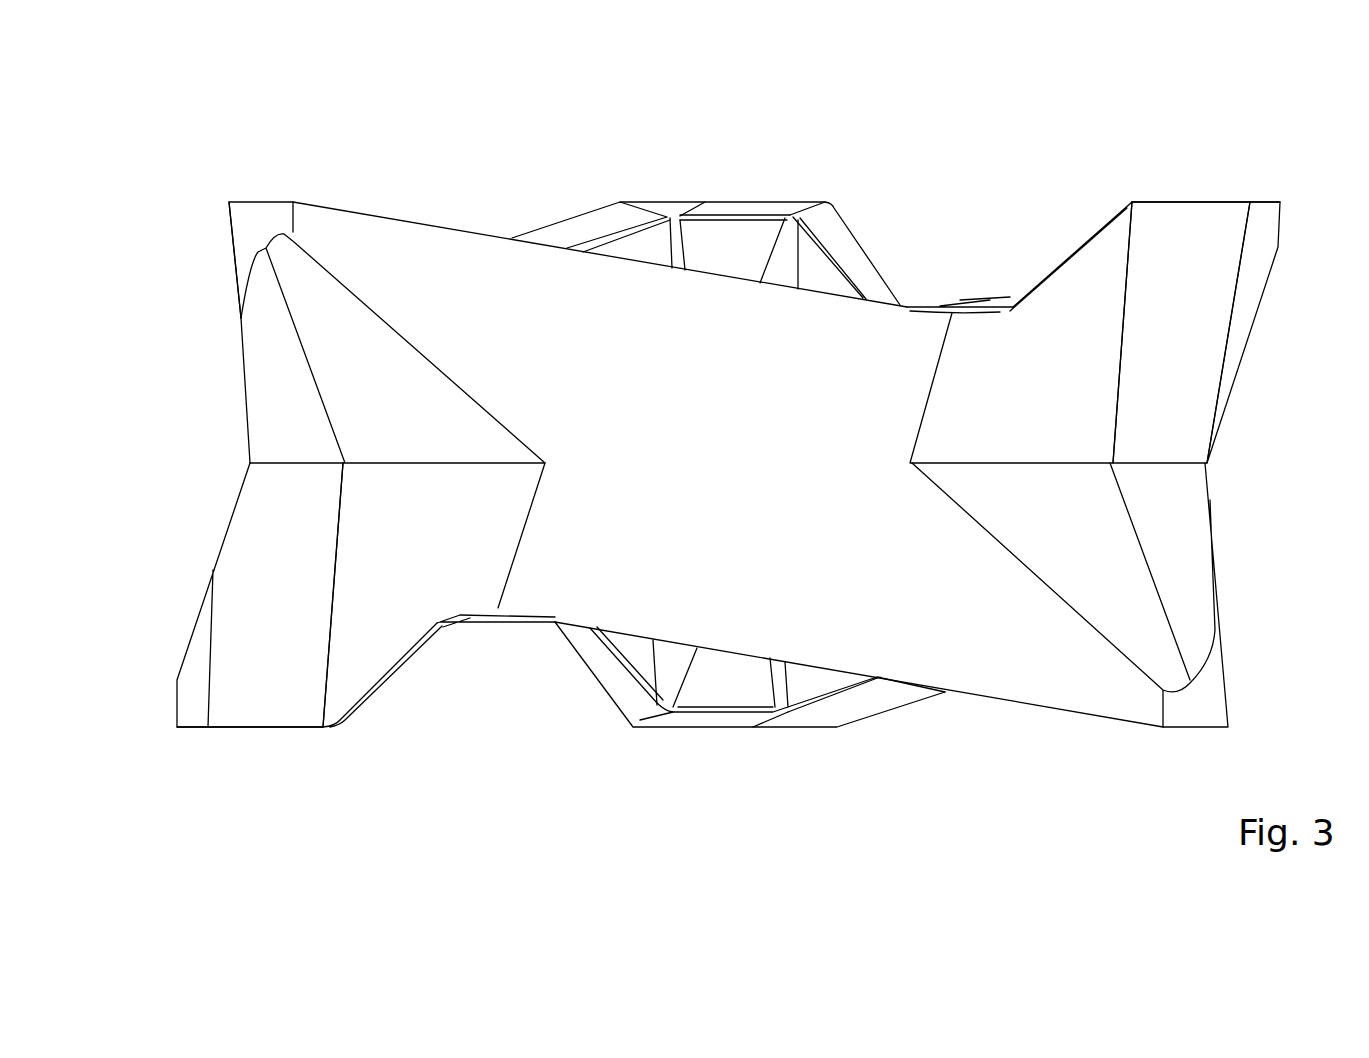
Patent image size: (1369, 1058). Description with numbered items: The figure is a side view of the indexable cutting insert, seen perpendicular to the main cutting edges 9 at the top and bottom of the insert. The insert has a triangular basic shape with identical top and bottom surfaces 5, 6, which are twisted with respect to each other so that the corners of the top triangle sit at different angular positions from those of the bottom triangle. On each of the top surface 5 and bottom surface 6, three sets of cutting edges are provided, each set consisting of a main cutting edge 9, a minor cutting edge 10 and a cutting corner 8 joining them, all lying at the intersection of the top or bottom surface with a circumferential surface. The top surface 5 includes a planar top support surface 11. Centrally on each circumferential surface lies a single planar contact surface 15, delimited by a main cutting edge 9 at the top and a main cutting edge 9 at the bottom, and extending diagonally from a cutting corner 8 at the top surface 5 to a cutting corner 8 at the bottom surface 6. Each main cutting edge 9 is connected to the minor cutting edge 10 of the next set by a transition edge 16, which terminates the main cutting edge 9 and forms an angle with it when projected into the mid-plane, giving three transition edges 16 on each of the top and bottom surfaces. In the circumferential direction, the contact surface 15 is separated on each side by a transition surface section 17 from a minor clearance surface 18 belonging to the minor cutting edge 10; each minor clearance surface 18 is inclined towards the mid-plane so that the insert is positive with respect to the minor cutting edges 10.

The top surface 5 is at (388, 197).
The bottom surface 6 is at (1043, 720).
The cutting corner 8 is at (268, 201).
The main cutting edge 9 is at (583, 250).
The minor cutting edge 10 is at (1203, 202).
The planar top support surface 11 is at (935, 285).
The planar contact surface 15 is at (738, 598).
The transition edge 16 is at (1060, 262).
The transition surface section 17 is at (1037, 360).
The minor clearance surface 18 is at (227, 300).